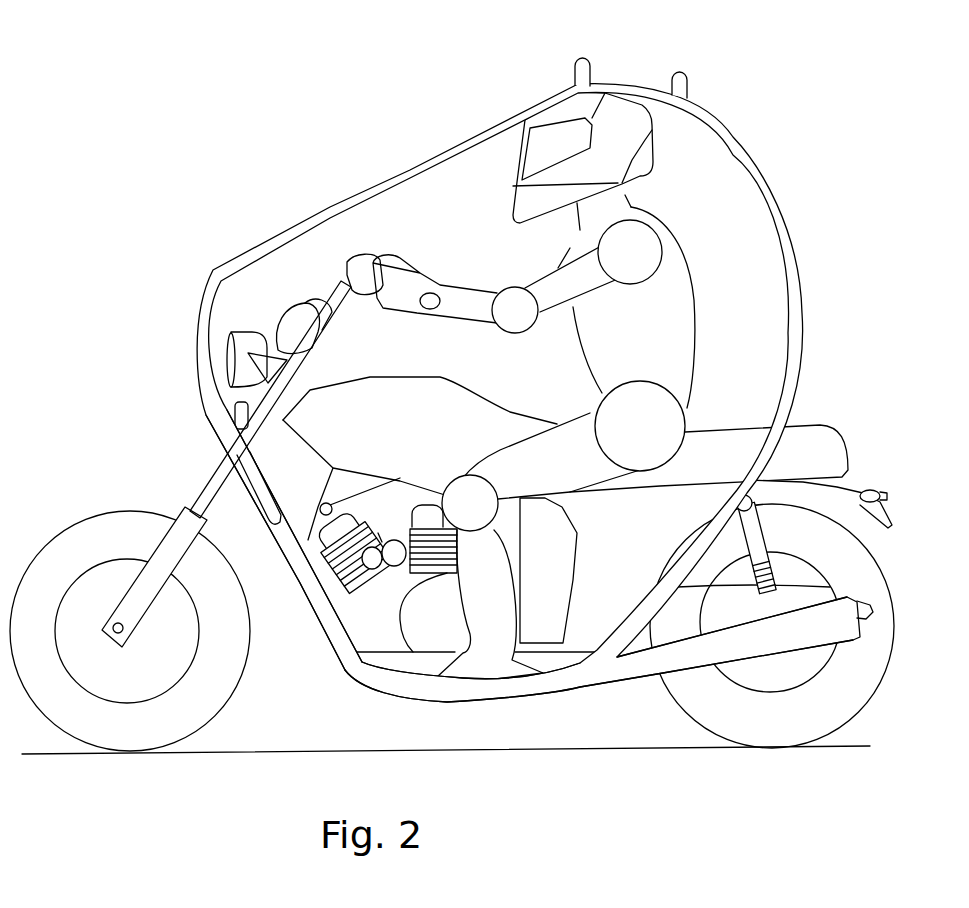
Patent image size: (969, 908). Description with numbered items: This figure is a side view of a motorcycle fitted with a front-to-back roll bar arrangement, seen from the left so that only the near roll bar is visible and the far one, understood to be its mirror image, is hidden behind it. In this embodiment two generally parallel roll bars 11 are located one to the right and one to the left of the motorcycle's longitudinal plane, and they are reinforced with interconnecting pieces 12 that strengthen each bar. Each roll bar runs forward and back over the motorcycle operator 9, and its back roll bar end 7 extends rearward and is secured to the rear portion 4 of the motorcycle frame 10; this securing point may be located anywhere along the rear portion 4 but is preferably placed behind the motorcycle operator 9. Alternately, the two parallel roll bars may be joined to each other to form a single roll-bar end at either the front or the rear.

The rear portion 4 is at (633, 604).
The back roll bar end 7 is at (733, 499).
The motorcycle operator 9 is at (637, 334).
The motorcycle frame 10 is at (298, 581).
The generally parallel roll bars 11 is at (457, 358).
The interconnecting pieces 12 is at (573, 70).